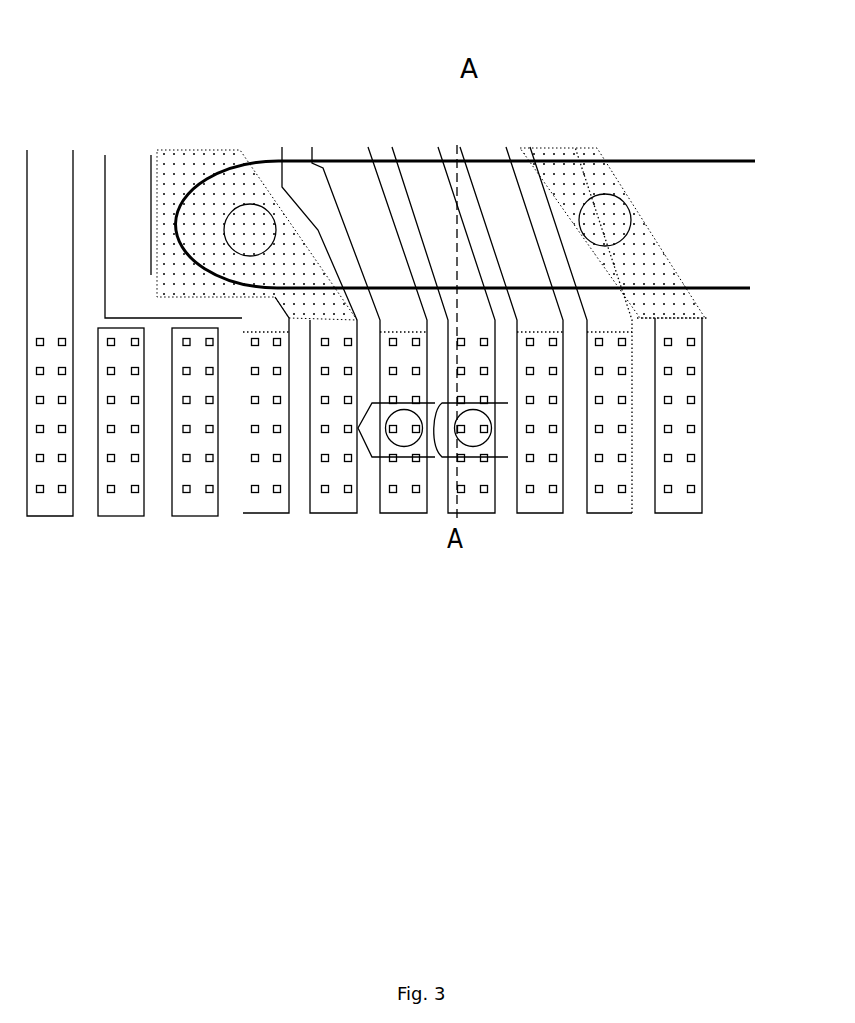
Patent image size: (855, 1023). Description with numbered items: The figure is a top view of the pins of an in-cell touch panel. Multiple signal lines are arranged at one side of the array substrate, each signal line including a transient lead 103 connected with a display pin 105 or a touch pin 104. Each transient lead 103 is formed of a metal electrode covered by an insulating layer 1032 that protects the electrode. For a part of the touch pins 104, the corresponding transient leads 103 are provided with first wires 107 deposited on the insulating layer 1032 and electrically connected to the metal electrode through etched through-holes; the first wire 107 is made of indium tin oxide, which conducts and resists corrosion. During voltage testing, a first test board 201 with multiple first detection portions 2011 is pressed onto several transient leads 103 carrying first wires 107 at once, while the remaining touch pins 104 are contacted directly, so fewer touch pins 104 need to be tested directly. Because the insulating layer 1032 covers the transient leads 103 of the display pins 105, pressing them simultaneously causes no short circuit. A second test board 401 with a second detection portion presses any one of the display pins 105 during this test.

The transient lead 103 is at (230, 125).
The insulating layer 1032 is at (135, 462).
The touch pin 104 is at (303, 510).
The display pin 105 is at (388, 517).
The first wire 107 is at (172, 134).
The first test board 201 is at (733, 290).
The first detection portion 2011 is at (259, 190).
The second test board 401 is at (370, 470).